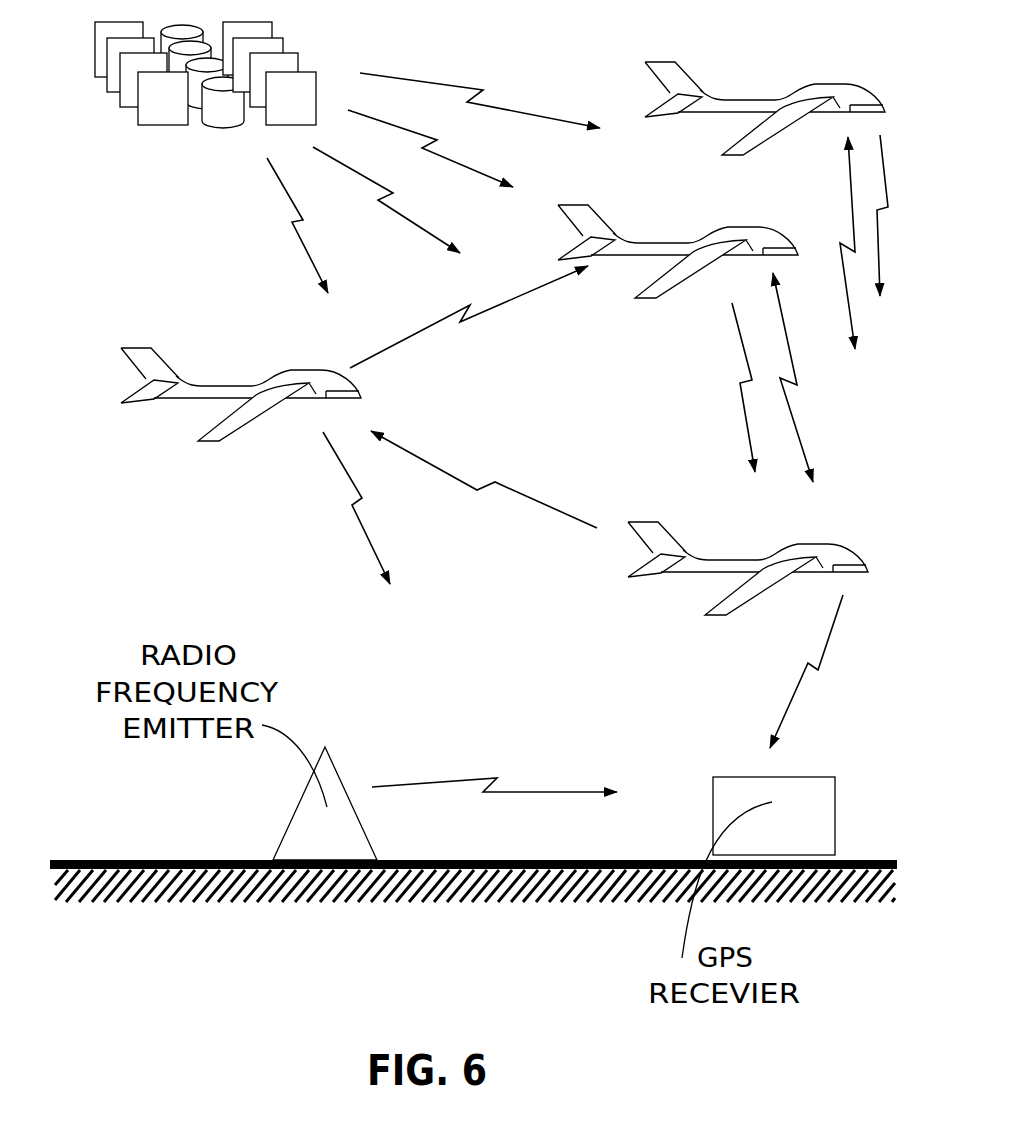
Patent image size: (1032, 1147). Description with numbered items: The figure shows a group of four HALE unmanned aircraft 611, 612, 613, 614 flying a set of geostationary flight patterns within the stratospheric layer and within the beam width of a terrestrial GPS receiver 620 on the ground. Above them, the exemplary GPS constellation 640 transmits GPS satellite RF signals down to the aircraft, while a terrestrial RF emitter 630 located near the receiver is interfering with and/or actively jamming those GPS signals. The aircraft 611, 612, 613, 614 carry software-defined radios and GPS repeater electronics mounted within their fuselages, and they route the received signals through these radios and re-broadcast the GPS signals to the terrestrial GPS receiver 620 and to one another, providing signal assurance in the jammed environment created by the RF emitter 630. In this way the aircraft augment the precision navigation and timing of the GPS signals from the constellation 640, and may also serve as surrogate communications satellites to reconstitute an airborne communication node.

The HALE unmanned aircraft 611 is at (812, 82).
The HALE unmanned aircraft 612 is at (697, 235).
The HALE unmanned aircraft 613 is at (272, 378).
The HALE unmanned aircraft 614 is at (780, 550).
The terrestrial GPS receiver 620 is at (723, 785).
The terrestrial RF emitter 630 is at (307, 827).
The GPS constellation 640 is at (182, 150).